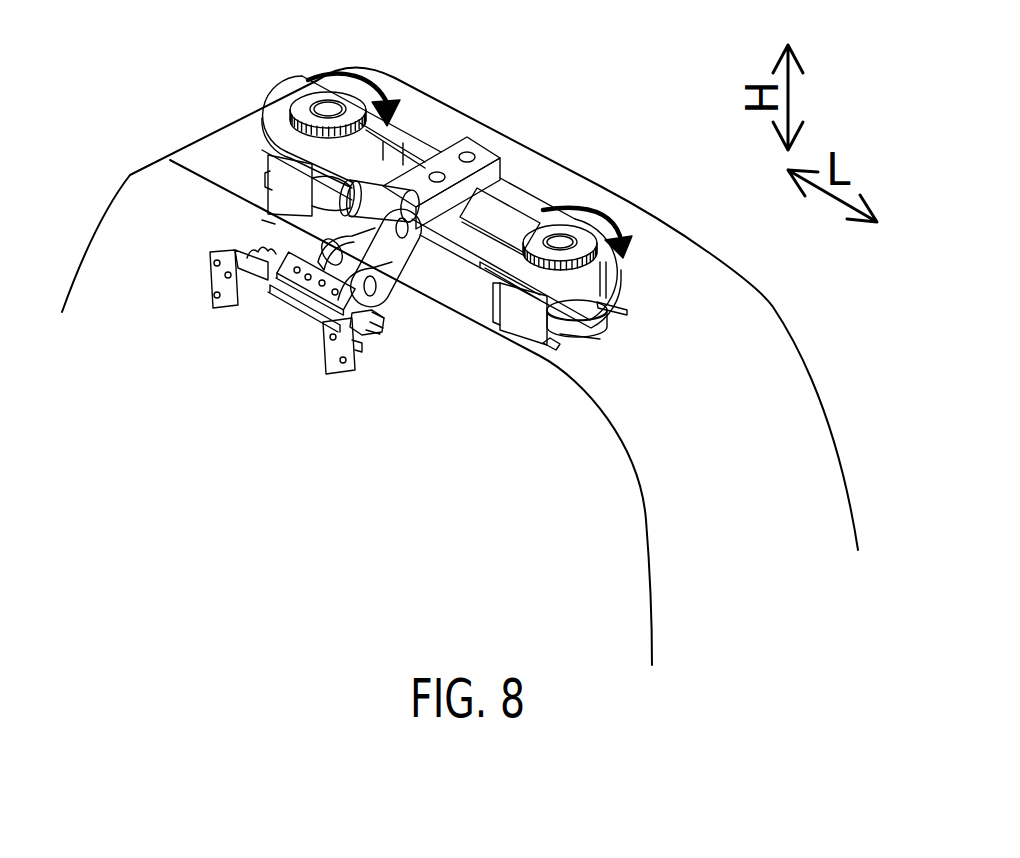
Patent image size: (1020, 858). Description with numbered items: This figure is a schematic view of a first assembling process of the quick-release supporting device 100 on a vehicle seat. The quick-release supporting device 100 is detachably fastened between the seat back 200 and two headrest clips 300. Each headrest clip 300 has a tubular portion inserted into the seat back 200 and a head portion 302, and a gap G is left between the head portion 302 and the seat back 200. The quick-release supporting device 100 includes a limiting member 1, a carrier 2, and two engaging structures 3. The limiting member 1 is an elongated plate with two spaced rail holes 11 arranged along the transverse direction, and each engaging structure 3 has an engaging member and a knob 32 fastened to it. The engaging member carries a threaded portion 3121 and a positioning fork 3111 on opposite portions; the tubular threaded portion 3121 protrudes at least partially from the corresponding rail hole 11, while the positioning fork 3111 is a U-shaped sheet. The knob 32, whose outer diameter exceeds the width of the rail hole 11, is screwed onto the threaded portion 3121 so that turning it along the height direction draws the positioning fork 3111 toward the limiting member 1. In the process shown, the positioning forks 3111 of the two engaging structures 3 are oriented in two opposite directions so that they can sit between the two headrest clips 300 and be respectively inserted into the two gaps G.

The limiting member 1 is at (281, 107).
The carrier 2 is at (480, 151).
The engaging structure 3 is at (303, 100).
The rail hole 11 is at (409, 150).
The knob 32 is at (581, 231).
The quick-release supporting device 100 is at (468, 259).
The seat back 200 is at (797, 340).
The headrest clip 300 is at (601, 320).
The head portion 302 is at (330, 191).
The positioning fork 3111 is at (553, 342).
The threaded portion 3121 is at (560, 241).
The gap G is at (578, 338).